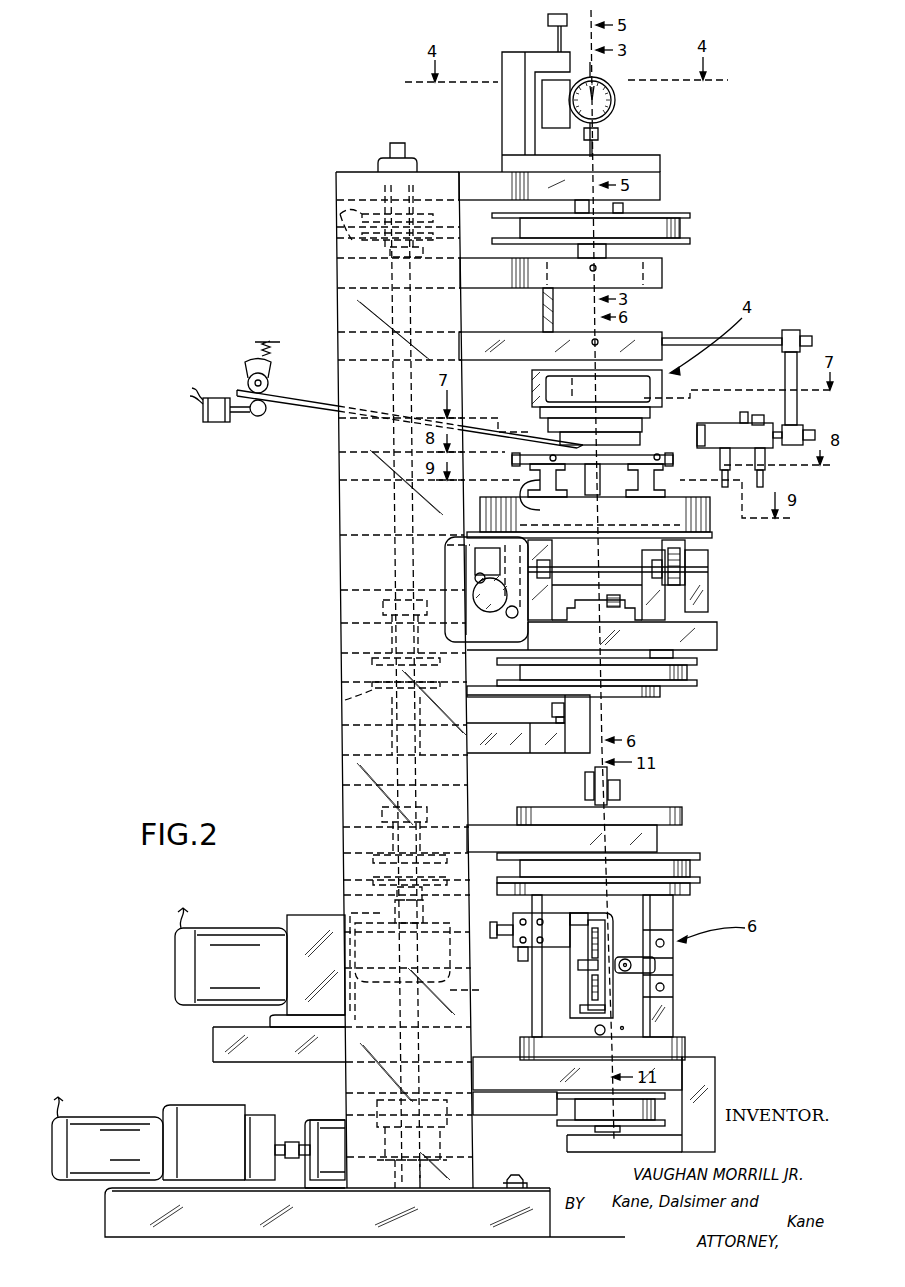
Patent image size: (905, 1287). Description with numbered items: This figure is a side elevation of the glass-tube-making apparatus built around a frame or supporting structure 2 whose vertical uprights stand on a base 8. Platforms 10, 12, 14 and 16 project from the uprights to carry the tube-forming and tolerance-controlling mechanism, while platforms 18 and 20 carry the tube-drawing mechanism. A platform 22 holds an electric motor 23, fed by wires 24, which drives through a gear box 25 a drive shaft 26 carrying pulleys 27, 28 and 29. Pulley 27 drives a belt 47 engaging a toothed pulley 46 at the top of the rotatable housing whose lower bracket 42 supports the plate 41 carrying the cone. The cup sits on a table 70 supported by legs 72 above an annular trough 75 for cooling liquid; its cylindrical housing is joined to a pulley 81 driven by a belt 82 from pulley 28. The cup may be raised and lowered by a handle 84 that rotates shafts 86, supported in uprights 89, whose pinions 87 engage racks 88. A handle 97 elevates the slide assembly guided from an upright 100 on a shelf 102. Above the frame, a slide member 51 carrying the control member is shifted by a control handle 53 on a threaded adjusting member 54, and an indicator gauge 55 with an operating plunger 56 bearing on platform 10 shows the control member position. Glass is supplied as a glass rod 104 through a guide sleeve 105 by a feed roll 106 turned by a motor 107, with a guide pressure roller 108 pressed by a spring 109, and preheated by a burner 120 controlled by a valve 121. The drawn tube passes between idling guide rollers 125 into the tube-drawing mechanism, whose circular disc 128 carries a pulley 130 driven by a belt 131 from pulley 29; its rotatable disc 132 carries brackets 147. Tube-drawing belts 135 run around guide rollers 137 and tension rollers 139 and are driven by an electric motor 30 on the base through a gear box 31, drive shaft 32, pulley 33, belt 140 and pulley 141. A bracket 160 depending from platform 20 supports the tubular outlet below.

The frame or supporting structure 2 is at (338, 530).
The base 8 is at (105, 1205).
The platform 10 is at (660, 166).
The platform 12 is at (665, 275).
The platform 14 is at (665, 340).
The platform 16 is at (716, 641).
The platform 18 is at (658, 842).
The platform 20 is at (678, 1075).
The platform 22 is at (213, 1043).
The electric motor 23 is at (177, 982).
The wires 24 is at (174, 915).
The gear box 25 is at (426, 966).
The drive shaft 26 is at (362, 792).
The pulley 27 is at (352, 220).
The pulley 28 is at (355, 698).
The pulley 29 is at (362, 890).
The electric motor 30 is at (187, 1127).
The gear box 31 is at (315, 1120).
The drive shaft 32 is at (388, 1190).
The pulley 33 is at (437, 1068).
The plate 41 is at (665, 396).
The bracket 42 is at (532, 400).
The toothed pulley 46 is at (680, 212).
The belt 47 is at (686, 233).
The slide member 51 is at (524, 112).
The control handle 53 is at (548, 20).
The threaded adjusting member 54 is at (556, 46).
The indicator gauge 55 is at (616, 101).
The operating plunger 56 is at (603, 143).
The table 70 is at (512, 459).
The legs 72 is at (539, 495).
The annular trough 75 is at (480, 513).
The pulley 81 is at (682, 686).
The toothed or geared belt 82 is at (692, 677).
The handle 84 is at (470, 589).
The shafts 86 is at (610, 562).
The pinions 87 is at (522, 618).
The racks 88 is at (458, 553).
The uprights 89 is at (712, 601).
The handle 97 is at (552, 712).
The upright 100 is at (592, 709).
The shelf 102 is at (485, 755).
The glass rod 104 is at (270, 392).
The guide sleeve 105 is at (305, 412).
The feed roll 106 is at (256, 420).
The motor 107 is at (213, 424).
The guide pressure roller 108 is at (248, 380).
The spring 109 is at (260, 343).
The preheating burner 120 is at (672, 432).
The valve 121 is at (785, 426).
The idling guide rollers 125 is at (624, 784).
The circular disc 128 is at (683, 813).
The pulley 130 is at (695, 886).
The geared or toothed belt 131 is at (700, 872).
The rotatable disc 132 is at (657, 1045).
The tube-drawing belts 135 is at (593, 997).
The guide rollers 137 is at (613, 936).
The tension rollers 139 is at (590, 957).
The belt 140 is at (493, 1118).
The pulley 141 is at (568, 1123).
The brackets 147 is at (656, 964).
The bracket 160 is at (666, 1138).